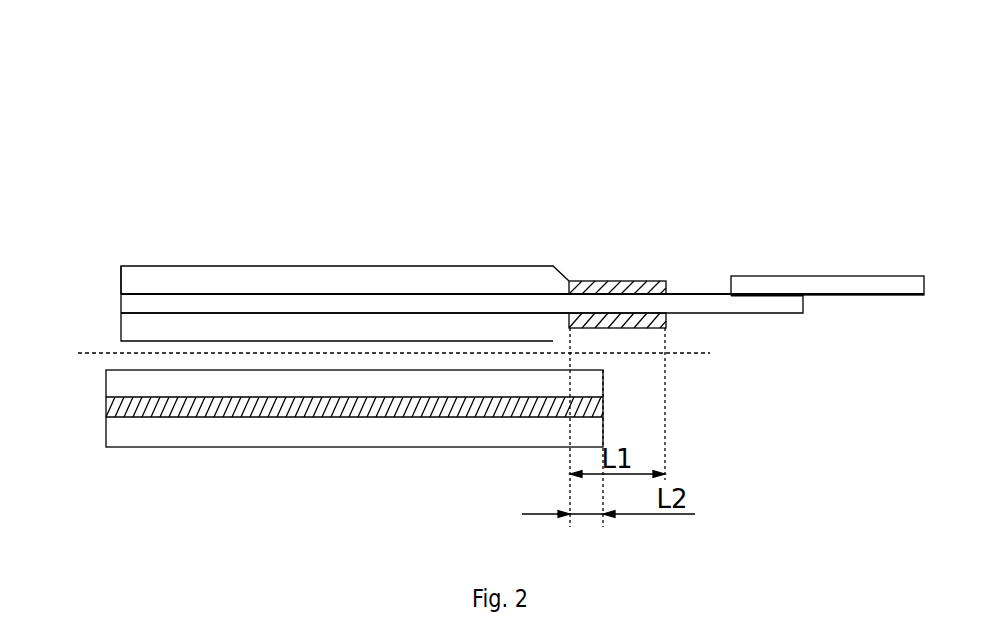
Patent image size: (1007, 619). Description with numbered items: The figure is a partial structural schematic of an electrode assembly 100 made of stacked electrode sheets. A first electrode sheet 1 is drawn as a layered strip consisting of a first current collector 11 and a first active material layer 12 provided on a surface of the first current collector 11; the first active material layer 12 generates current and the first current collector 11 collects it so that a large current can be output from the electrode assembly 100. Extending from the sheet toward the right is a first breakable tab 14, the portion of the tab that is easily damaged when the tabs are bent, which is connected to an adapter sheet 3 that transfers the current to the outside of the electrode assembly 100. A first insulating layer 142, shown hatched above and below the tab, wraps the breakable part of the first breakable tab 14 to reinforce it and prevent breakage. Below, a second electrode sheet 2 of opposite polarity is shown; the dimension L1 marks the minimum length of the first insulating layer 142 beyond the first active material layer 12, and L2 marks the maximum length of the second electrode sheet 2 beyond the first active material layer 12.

The electrode assembly 100 is at (50, 25).
The first electrode sheet 1 is at (253, 103).
The first current collector 11 is at (185, 303).
The first active material layer 12 is at (244, 276).
The first breakable tab 14 is at (683, 308).
The first insulating layer 142 is at (607, 287).
The second electrode sheet 2 is at (147, 352).
The adapter sheet 3 is at (788, 285).